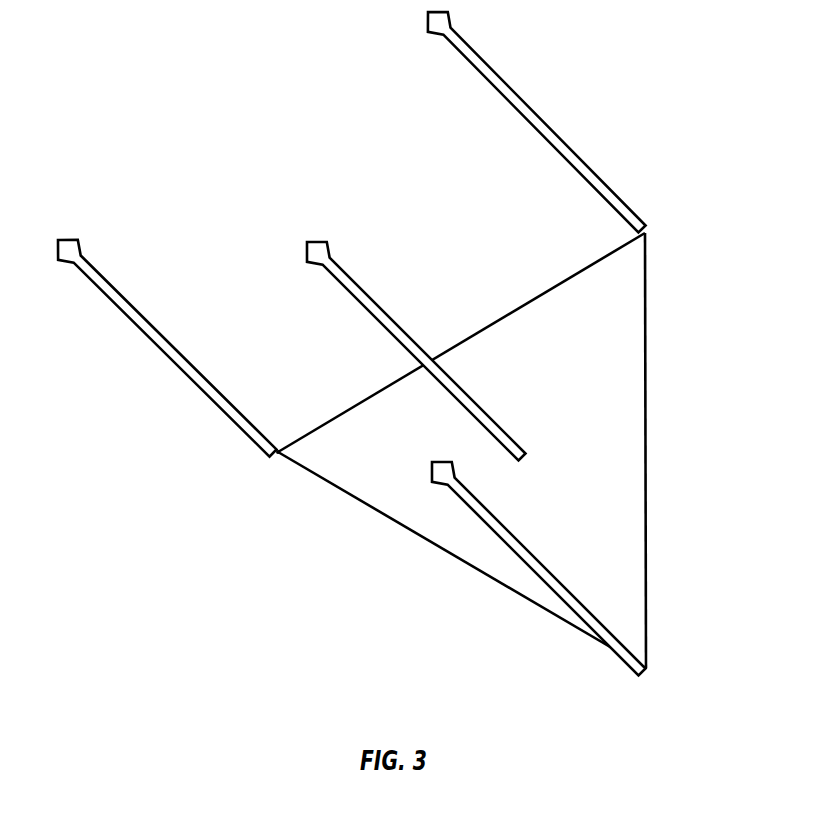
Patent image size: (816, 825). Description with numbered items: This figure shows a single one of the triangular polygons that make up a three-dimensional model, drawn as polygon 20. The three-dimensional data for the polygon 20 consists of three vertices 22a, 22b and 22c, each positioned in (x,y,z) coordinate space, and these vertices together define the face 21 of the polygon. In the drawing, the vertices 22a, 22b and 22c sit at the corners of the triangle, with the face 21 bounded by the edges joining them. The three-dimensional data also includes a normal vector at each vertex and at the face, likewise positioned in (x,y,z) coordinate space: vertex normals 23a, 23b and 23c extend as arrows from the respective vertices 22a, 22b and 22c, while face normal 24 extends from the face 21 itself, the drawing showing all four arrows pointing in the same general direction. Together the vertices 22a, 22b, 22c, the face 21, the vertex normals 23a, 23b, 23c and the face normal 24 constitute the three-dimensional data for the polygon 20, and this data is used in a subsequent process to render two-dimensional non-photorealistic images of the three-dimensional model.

The polygon 20 is at (156, 54).
The face 21 is at (642, 501).
The vertex 22a is at (650, 233).
The vertex 22b is at (650, 668).
The vertex 22c is at (276, 457).
The vertex normal 23a is at (580, 165).
The vertex normal 23b is at (503, 522).
The vertex normal 23c is at (120, 300).
The face normal 24 is at (355, 283).